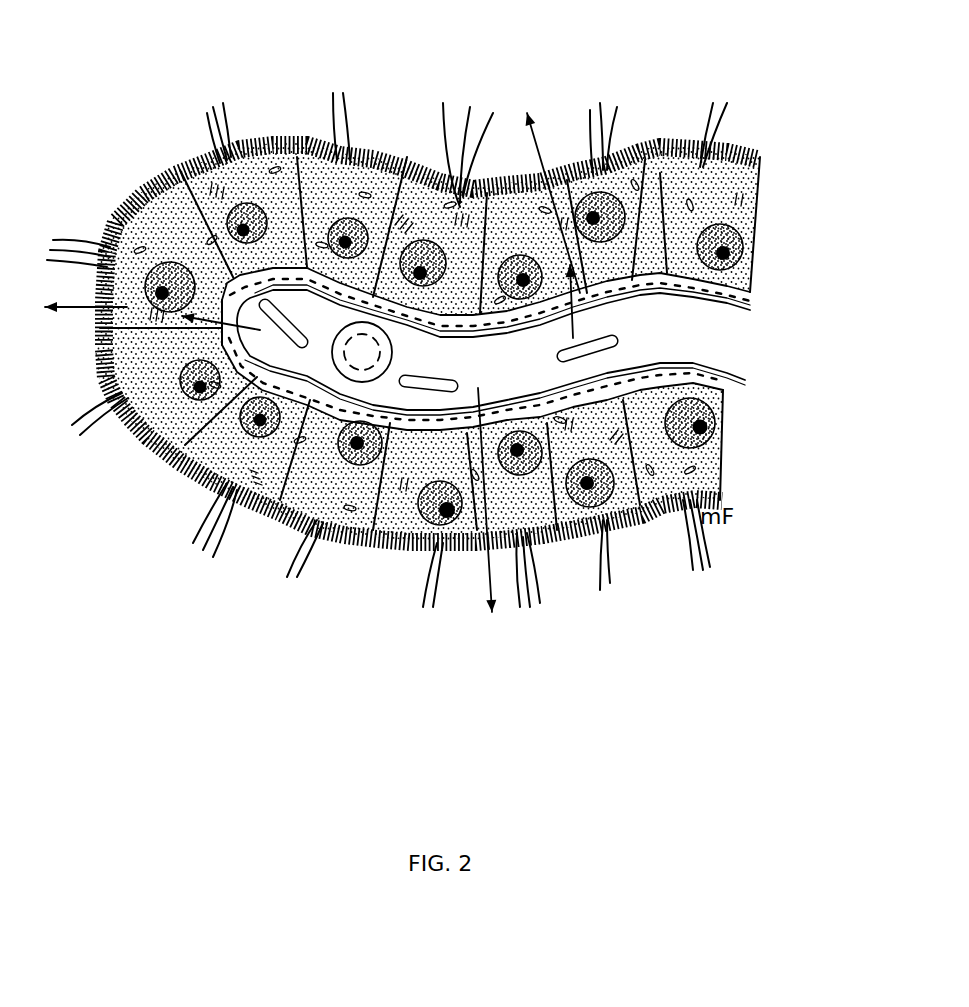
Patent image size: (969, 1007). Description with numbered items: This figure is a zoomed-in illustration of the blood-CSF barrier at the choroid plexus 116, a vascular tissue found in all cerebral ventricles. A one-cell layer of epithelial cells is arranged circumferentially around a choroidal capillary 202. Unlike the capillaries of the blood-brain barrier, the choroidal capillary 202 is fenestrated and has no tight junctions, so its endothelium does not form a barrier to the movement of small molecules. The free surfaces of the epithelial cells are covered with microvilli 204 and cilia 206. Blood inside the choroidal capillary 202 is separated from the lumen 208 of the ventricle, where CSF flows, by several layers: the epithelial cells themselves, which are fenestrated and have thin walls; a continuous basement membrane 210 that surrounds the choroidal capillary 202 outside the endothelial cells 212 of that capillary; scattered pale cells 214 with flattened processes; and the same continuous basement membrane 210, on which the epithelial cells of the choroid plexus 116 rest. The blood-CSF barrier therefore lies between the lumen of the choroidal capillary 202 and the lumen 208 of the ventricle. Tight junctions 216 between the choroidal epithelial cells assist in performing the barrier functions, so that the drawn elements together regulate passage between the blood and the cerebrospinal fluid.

The choroid plexus 116 is at (210, 190).
The choroidal capillary 202 is at (690, 320).
The microvilli 204 is at (318, 157).
The cilia 206 is at (223, 103).
The lumen of a ventricle 208 is at (247, 557).
The continuous basement membrane 210 is at (645, 160).
The endothelial cells 212 is at (720, 300).
The scattered pale cells 214 is at (497, 337).
The tight junctions 216 is at (403, 197).